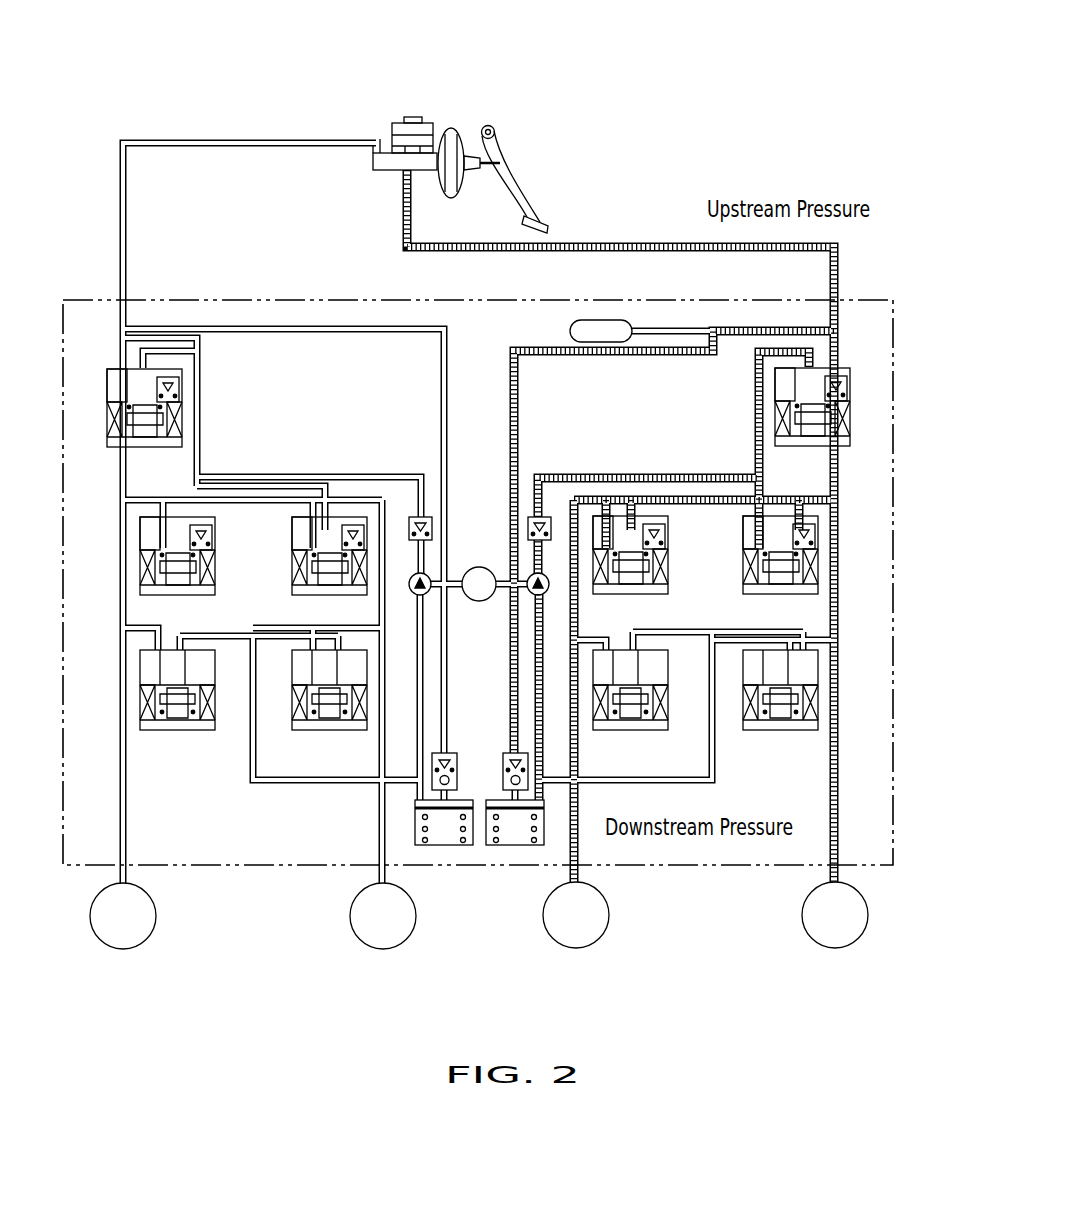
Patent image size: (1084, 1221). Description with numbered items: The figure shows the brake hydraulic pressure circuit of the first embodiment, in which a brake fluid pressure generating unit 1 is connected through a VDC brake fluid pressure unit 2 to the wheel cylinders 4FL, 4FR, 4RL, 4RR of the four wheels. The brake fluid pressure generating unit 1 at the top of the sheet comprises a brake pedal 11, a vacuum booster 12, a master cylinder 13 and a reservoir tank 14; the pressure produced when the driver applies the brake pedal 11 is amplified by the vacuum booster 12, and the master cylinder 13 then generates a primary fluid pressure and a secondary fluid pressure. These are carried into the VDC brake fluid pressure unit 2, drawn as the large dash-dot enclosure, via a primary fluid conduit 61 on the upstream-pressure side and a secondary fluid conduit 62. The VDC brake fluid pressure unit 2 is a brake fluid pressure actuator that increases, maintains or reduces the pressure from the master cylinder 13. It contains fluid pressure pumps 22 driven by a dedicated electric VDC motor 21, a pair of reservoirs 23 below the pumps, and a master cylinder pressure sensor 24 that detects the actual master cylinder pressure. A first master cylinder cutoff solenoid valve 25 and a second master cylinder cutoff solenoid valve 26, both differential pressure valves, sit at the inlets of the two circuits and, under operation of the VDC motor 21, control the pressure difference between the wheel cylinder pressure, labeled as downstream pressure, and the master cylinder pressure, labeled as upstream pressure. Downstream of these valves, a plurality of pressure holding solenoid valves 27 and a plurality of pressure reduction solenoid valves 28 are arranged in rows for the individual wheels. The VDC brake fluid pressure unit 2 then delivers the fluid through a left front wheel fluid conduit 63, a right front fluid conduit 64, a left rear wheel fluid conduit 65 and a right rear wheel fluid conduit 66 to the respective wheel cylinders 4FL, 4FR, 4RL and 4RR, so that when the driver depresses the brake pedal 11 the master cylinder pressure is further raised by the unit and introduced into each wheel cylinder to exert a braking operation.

The brake fluid pressure generating unit 1 is at (455, 124).
The VDC brake fluid pressure unit 2 is at (236, 294).
The brake pedal 11 is at (520, 193).
The vacuum booster 12 is at (455, 199).
The master cylinder 13 is at (384, 173).
The reservoir tank 14 is at (396, 123).
The VDC motor 21 is at (478, 566).
The fluid pressure pumps 22 is at (530, 596).
The reservoirs 23 is at (497, 795).
The master cylinder pressure sensor 24 is at (570, 330).
The first master cylinder cutoff solenoid valve 25 is at (832, 449).
The second master cylinder cutoff solenoid valve 26 is at (128, 452).
The pressure holding solenoid valves 27 is at (215, 562).
The pressure reduction solenoid valves 28 is at (190, 733).
The primary fluid conduit 61 is at (630, 242).
The secondary fluid conduit 62 is at (213, 137).
The left front wheel fluid conduit 63 is at (128, 873).
The right front fluid conduit 64 is at (841, 873).
The left rear wheel fluid conduit 65 is at (582, 873).
The right rear wheel fluid conduit 66 is at (390, 873).
The left front wheel cylinder 4FL is at (156, 918).
The right rear wheel cylinder 4RR is at (417, 918).
The left rear wheel cylinder 4RL is at (608, 918).
The right front wheel cylinder 4FR is at (867, 918).